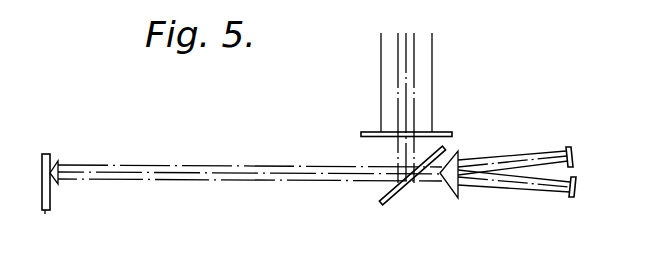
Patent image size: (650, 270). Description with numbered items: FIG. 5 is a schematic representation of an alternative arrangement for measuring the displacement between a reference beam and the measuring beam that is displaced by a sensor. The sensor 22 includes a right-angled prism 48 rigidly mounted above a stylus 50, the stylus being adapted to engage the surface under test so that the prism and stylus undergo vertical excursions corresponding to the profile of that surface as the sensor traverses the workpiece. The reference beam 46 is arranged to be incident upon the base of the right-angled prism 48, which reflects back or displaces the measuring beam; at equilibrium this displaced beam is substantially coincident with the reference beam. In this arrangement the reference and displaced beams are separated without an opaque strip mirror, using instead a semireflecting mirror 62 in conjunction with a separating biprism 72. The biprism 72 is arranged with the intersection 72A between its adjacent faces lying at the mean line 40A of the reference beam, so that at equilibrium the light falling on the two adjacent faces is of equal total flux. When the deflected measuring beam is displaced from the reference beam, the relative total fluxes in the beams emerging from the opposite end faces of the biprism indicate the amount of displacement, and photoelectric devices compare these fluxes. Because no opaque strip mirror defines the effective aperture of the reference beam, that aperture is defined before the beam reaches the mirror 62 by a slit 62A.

The sensor 22 is at (40, 177).
The right-angled prism 48 is at (56, 161).
The stylus 50 is at (45, 211).
The reference beam 46 is at (133, 165).
The mean line of the reference beam 40A is at (197, 172).
The slit 62A is at (361, 135).
The semireflecting mirror 62 is at (382, 203).
The biprism 72 is at (460, 157).
The intersection between adjacent faces of the biprism 72A is at (437, 183).